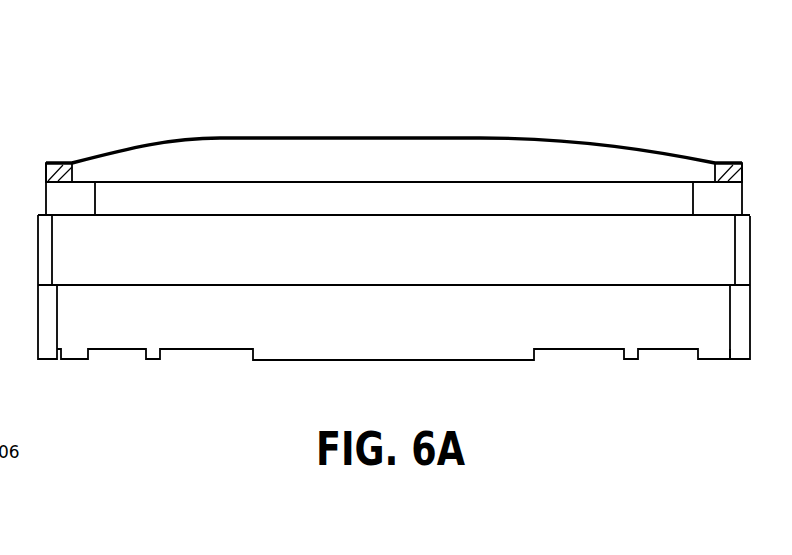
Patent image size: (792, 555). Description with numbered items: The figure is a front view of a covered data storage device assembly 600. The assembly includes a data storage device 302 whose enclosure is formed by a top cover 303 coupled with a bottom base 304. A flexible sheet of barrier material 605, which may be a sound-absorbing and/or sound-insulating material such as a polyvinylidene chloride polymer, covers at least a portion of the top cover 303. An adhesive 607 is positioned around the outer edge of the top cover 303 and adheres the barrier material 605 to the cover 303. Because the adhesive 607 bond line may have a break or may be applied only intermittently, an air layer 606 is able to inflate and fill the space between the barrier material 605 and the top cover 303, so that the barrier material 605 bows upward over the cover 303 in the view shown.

The data storage device assembly 600 is at (226, 43).
The barrier material 605 is at (515, 135).
The air layer 606 is at (298, 160).
The adhesive 607 is at (62, 160).
The top cover 303 is at (614, 200).
The data storage device 302 is at (707, 324).
The bottom base 304 is at (577, 356).